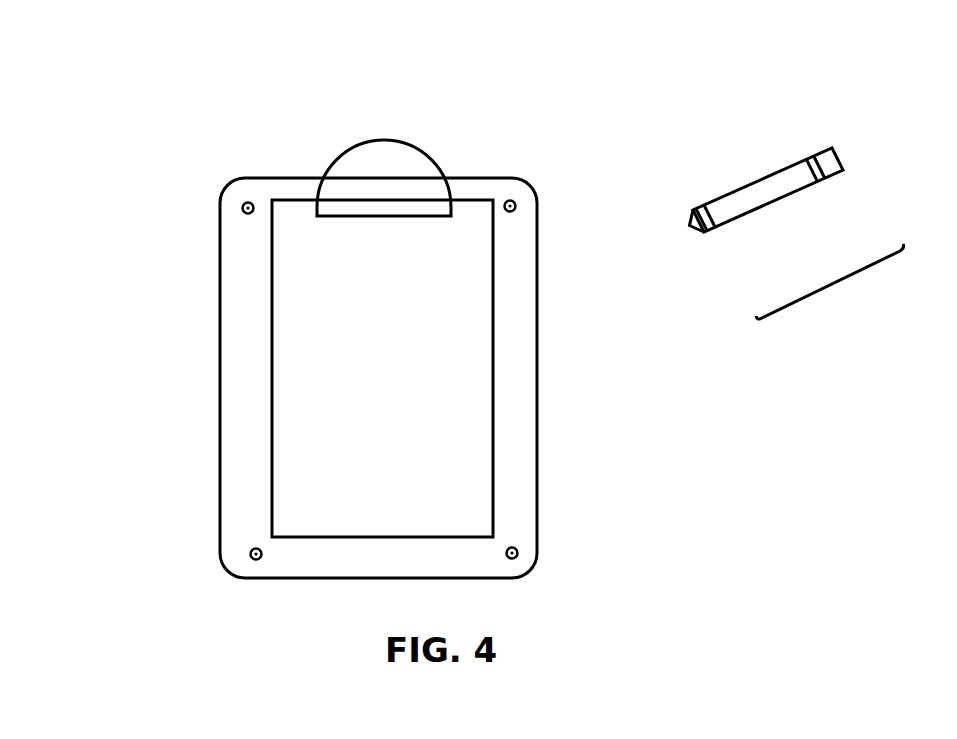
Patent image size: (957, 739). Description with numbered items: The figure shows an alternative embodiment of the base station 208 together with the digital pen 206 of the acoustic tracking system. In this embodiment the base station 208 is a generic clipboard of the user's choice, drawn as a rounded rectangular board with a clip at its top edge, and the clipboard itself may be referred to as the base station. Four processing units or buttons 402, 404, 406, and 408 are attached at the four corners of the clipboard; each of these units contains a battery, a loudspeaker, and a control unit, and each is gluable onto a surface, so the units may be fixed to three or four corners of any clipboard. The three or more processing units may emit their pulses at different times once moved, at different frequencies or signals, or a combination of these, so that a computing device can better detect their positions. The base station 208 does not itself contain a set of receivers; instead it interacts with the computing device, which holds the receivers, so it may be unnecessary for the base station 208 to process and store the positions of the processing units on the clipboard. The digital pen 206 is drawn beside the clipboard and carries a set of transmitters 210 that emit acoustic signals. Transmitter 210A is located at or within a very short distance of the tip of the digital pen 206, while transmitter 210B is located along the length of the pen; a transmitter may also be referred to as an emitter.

The base station 208 is at (536, 169).
The processing unit 402 is at (244, 203).
The processing unit 404 is at (515, 201).
The processing unit 406 is at (252, 549).
The processing unit 408 is at (517, 548).
The digital pen 206 is at (816, 169).
The transmitter 210A is at (692, 231).
The transmitter 210B is at (820, 181).
The set of transmitters 210 is at (835, 289).